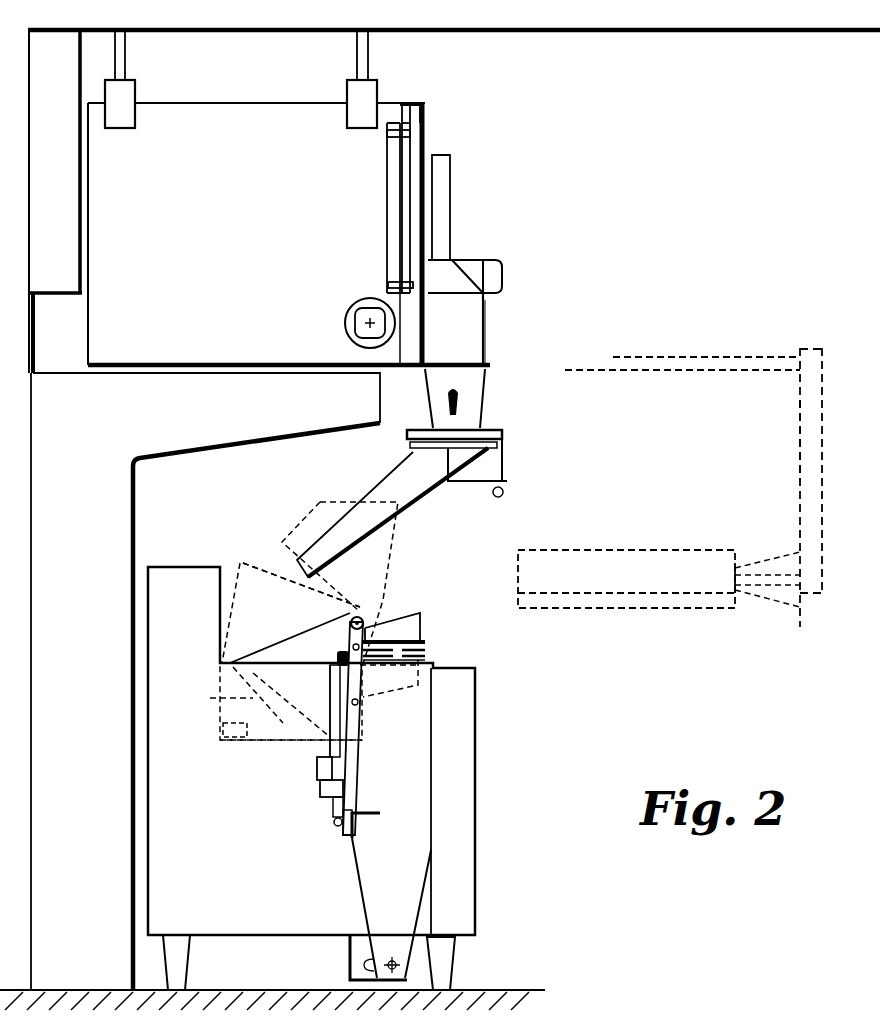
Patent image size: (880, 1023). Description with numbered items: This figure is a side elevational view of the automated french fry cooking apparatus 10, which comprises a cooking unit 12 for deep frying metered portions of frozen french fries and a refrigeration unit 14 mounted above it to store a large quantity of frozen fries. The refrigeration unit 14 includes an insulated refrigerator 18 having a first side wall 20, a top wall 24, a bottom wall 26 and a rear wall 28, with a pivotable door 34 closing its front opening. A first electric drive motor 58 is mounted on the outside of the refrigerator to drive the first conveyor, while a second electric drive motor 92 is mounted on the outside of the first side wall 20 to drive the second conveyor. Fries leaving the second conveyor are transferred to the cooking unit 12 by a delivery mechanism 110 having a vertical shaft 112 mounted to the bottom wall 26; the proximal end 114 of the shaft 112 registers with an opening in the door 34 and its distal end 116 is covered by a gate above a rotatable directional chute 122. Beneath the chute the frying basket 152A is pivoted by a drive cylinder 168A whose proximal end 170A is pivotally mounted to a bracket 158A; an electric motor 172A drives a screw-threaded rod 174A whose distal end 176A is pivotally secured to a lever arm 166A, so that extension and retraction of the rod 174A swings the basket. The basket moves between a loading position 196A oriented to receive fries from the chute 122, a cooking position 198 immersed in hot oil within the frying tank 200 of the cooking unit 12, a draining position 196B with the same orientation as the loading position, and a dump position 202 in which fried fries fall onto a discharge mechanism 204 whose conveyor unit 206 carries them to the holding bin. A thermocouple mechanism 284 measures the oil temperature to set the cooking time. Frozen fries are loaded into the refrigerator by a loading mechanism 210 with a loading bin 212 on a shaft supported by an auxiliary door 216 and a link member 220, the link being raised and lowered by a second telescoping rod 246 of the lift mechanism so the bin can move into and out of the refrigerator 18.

The automated french fry cooking apparatus 10 is at (577, 246).
The cooking unit 12 is at (485, 739).
The refrigeration unit 14 is at (429, 97).
The insulated refrigerator 18 is at (300, 114).
The first side wall 20 is at (233, 114).
The top wall 24 is at (170, 100).
The bottom wall 26 is at (225, 368).
The rear wall 28 is at (88, 303).
The pivotable door 34 is at (417, 135).
The first electric drive motor 58 is at (483, 262).
The second electric drive motor 92 is at (344, 320).
The delivery mechanism 110 is at (502, 341).
The vertical shaft 112 is at (473, 382).
The proximal end 114 is at (486, 315).
The distal end 116 is at (482, 423).
The rotatable directional chute 122 is at (417, 490).
The frying basket 152A is at (298, 511).
The bracket 158A is at (370, 814).
The lever arm 166A is at (347, 643).
The drive cylinder 168A is at (340, 767).
The proximal end 170A is at (334, 822).
The electric motor 172A is at (323, 785).
The screw-threaded rod 174A is at (333, 675).
The distal end 176A is at (340, 658).
The loading position 196A is at (233, 562).
The draining position 196B is at (301, 585).
The cooking position 198 is at (206, 689).
The frying tank 200 is at (260, 742).
The dump position 202 is at (390, 553).
The discharge mechanism 204 is at (441, 618).
The conveyor unit 206 is at (427, 642).
The loading mechanism 210 is at (813, 341).
The loading bin 212 is at (673, 582).
The auxiliary door 216 is at (800, 527).
The link member 220 is at (800, 403).
The second telescoping rod 246 is at (642, 357).
The thermocouple mechanism 284 is at (218, 740).